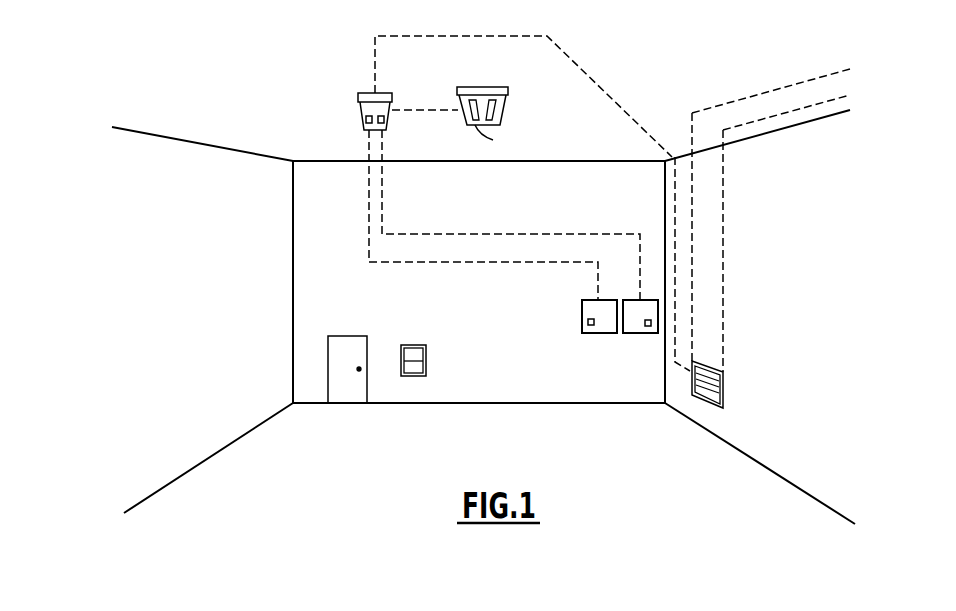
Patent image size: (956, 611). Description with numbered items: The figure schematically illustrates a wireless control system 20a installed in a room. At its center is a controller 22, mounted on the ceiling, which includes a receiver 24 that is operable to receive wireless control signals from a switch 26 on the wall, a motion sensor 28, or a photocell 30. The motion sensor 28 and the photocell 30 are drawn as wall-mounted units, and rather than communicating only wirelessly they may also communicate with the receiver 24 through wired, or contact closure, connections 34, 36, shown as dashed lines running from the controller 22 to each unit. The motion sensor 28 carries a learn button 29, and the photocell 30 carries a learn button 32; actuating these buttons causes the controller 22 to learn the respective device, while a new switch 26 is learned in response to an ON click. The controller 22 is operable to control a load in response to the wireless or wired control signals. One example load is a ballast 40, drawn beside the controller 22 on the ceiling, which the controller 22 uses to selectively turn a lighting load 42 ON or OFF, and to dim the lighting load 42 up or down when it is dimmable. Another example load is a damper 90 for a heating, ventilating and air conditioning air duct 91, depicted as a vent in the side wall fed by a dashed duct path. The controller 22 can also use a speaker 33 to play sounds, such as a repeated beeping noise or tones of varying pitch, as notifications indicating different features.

The wireless control system 20a is at (143, 84).
The controller 22 is at (359, 110).
The receiver 24 is at (365, 119).
The speaker 33 is at (385, 120).
The ballast 40 is at (491, 87).
The lighting load 42 is at (493, 140).
The wired connection 36 is at (519, 233).
The wired connection 34 is at (495, 263).
The motion sensor 28 is at (582, 312).
The learn button 29 is at (591, 326).
The photocell 30 is at (632, 334).
The learn button 32 is at (648, 327).
The switch 26 is at (428, 362).
The damper 90 is at (725, 395).
The HVAC air duct 91 is at (723, 280).